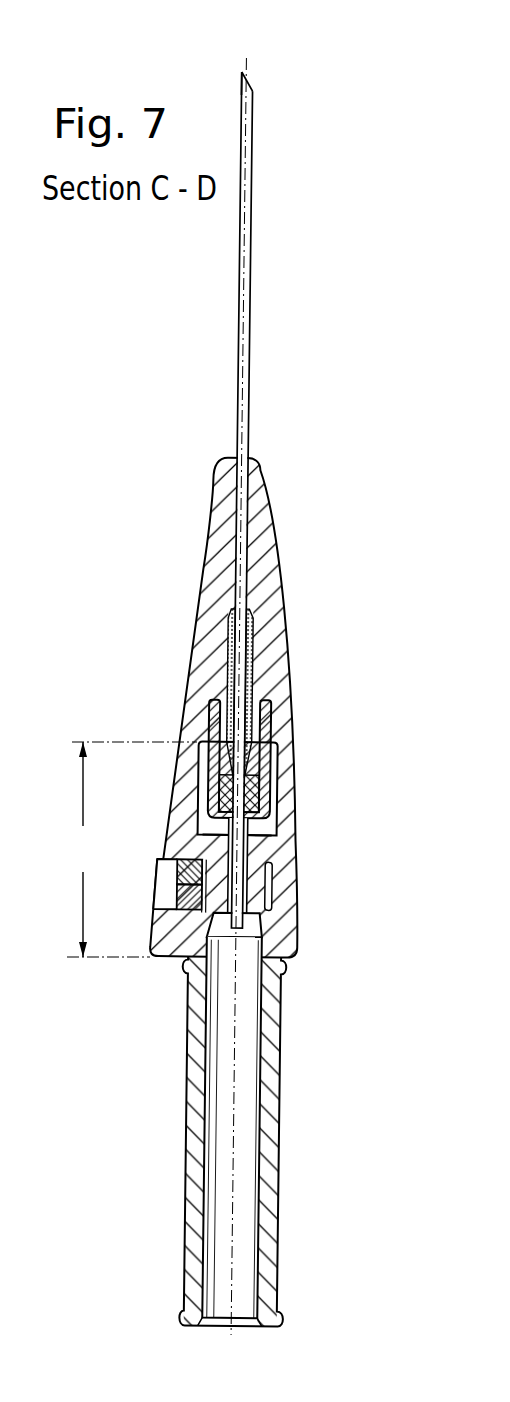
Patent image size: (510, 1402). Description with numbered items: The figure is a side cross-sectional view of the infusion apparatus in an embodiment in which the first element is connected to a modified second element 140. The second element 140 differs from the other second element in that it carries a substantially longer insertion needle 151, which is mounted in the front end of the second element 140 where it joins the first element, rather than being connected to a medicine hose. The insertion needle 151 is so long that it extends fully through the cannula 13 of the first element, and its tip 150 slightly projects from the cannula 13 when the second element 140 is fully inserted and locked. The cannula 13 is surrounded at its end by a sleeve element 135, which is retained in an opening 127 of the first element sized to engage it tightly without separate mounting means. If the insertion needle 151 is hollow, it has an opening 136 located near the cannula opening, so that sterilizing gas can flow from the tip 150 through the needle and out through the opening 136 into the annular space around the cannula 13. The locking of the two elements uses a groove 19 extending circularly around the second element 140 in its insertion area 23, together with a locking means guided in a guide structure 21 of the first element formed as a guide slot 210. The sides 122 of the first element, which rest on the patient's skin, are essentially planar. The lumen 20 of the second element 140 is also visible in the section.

The cannula 13 is at (250, 265).
The tip 150 is at (249, 76).
The sides 122 is at (206, 563).
The opening 127 is at (267, 699).
The sleeve element 135 is at (268, 734).
The opening 136 is at (258, 770).
The insertion needle 151 is at (240, 832).
The insertion area 23 is at (131, 849).
The guide structure 21 is at (167, 893).
The guide slot 210 is at (189, 896).
The groove 19 is at (207, 913).
The second element 140 is at (281, 1037).
The lumen 20 is at (236, 1086).